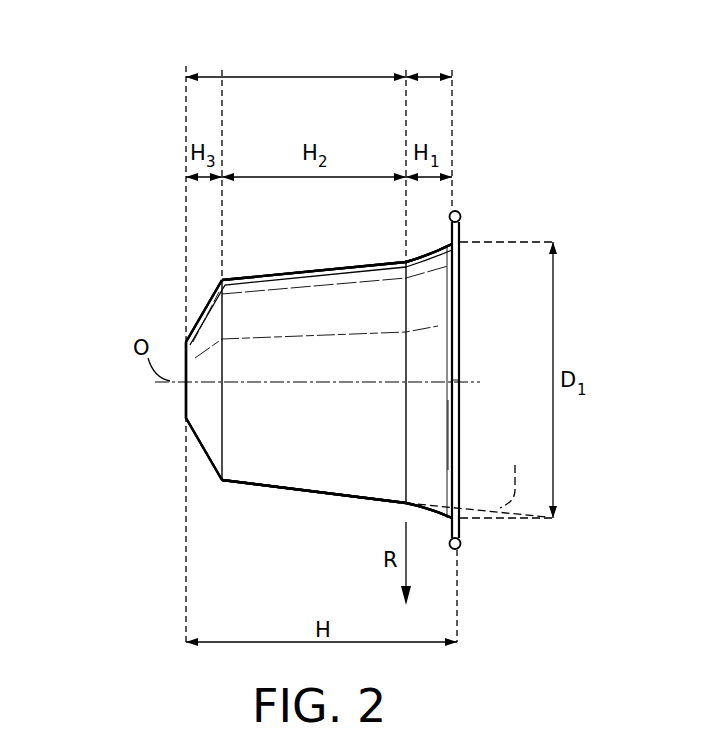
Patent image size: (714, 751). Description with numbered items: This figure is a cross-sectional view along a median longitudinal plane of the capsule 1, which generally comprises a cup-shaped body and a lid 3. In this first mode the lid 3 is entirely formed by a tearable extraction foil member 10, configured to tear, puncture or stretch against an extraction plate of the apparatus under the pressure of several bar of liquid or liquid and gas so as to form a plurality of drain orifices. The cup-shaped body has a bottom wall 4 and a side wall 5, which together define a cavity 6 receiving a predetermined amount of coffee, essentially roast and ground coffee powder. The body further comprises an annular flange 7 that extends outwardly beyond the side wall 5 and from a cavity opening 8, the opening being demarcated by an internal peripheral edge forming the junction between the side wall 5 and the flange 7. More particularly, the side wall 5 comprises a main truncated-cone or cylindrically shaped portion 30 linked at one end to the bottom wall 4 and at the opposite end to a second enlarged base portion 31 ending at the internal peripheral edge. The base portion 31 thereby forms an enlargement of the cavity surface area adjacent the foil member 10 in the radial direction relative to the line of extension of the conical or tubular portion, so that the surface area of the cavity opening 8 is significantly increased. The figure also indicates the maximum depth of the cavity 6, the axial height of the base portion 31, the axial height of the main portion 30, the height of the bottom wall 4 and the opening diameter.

The capsule 1 is at (116, 216).
The lid 3 is at (461, 352).
The bottom wall 4 is at (222, 66).
The side wall 5 is at (452, 67).
The cavity 6 is at (265, 420).
The annular flange 7 is at (459, 546).
The cavity opening 8 is at (446, 410).
The tearable extraction foil member 10 is at (460, 401).
The main truncated-cone or cylindrically shaped portion 30 is at (406, 135).
The enlarged base portion 31 is at (452, 135).